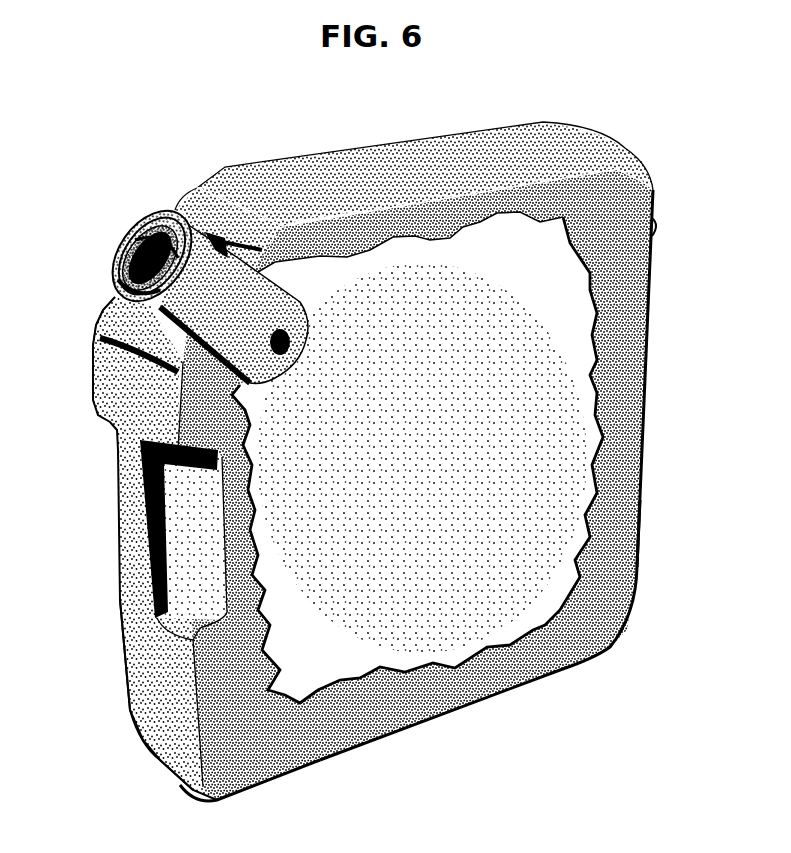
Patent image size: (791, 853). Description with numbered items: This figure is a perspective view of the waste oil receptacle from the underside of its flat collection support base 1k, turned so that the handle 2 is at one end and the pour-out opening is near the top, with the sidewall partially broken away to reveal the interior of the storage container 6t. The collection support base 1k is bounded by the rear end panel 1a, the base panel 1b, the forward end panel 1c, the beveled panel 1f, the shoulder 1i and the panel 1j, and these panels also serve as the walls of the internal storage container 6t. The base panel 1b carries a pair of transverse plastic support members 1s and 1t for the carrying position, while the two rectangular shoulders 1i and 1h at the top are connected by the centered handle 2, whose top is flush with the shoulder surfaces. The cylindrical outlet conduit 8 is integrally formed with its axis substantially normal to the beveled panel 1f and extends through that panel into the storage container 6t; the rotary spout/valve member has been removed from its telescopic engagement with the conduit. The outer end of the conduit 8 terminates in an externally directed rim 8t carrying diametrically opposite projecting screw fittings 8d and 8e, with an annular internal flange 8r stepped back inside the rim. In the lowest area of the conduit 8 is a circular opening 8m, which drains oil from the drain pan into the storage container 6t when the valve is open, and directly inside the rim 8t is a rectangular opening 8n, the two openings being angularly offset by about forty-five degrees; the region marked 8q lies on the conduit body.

The rear end panel 1a is at (527, 683).
The base panel 1b is at (643, 390).
The forward end panel 1c is at (385, 148).
The beveled panel 1f is at (117, 322).
The rectangular shoulder 1h is at (163, 697).
The rectangular shoulder 1i is at (113, 390).
The panel 1j is at (180, 542).
The collection support base 1k is at (333, 730).
The support member 1s is at (657, 227).
The support member 1t is at (633, 573).
The handle 2 is at (144, 613).
The storage container 6t is at (417, 457).
The outlet conduit 8 is at (208, 279).
The screw fitting 8d is at (155, 220).
The screw fitting 8e is at (122, 240).
The circular opening 8m is at (292, 347).
The rectangular opening 8n is at (227, 240).
The spout body 8q is at (289, 355).
The annular internal flange 8r is at (110, 277).
The rim 8t is at (120, 258).